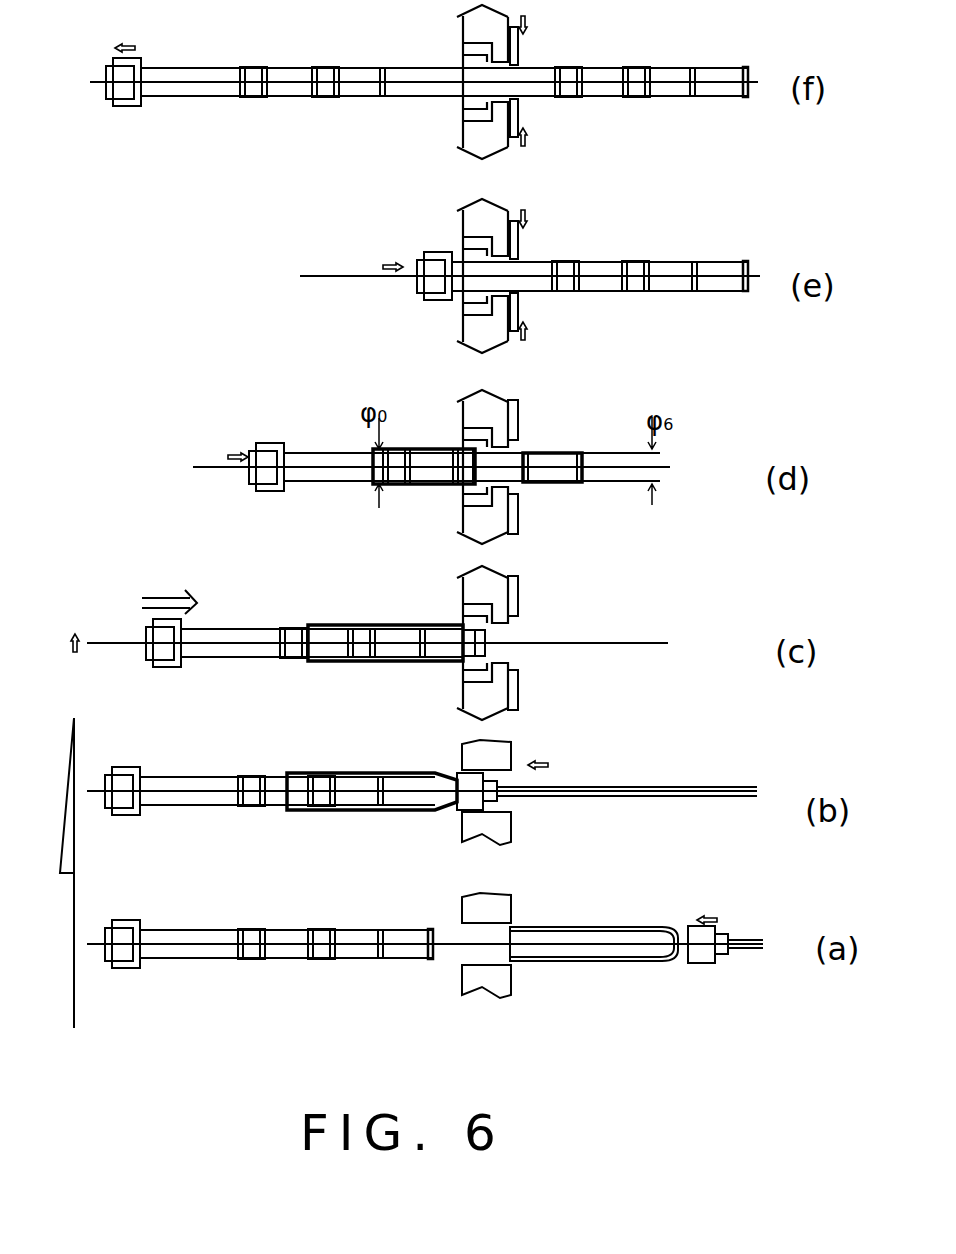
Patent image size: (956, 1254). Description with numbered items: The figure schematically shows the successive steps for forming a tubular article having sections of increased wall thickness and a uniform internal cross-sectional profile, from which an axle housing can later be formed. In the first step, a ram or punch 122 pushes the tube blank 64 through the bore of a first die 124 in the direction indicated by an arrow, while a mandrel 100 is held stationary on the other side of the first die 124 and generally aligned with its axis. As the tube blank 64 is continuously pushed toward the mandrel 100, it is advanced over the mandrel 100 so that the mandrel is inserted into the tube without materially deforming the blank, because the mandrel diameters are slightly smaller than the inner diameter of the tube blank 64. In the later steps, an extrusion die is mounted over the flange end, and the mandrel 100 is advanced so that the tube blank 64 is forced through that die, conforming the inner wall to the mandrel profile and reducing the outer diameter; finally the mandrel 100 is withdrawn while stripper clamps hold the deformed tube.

The mandrel 100 is at (181, 957).
The first die 124 is at (497, 983).
The tube blank 64 is at (630, 962).
The ram or punch 122 is at (707, 952).